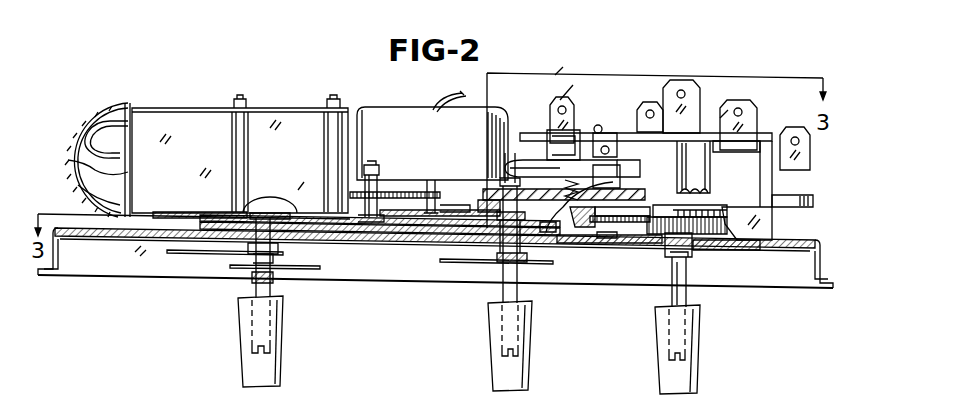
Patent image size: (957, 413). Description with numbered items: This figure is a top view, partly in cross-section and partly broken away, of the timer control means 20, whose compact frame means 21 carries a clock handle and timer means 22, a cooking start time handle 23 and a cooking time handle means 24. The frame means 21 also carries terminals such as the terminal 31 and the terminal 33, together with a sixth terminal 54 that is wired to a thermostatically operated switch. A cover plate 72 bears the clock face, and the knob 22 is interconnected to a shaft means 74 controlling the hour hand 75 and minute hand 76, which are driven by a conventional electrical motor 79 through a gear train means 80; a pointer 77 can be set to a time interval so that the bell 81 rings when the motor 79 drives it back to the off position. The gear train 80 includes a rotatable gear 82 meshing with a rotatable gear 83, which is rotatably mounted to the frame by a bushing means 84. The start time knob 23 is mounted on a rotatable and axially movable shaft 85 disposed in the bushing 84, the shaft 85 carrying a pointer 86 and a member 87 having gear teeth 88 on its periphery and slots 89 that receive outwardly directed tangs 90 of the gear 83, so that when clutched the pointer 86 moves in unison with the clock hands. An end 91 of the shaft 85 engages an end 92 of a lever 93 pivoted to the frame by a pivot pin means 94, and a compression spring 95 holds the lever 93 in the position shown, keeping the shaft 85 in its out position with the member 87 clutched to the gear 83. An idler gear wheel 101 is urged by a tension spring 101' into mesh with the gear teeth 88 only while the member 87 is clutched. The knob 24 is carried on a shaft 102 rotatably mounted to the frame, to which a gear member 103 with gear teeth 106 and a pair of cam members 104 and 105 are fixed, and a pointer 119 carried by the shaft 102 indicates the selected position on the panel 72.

The timer control means 20 is at (363, 50).
The frame means 21 is at (78, 273).
The clock handle and timer means 22 is at (285, 370).
The cooking start time handle 23 is at (530, 376).
The cooking time handle means 24 is at (698, 380).
The terminal 31 is at (646, 114).
The terminal 33 is at (745, 115).
The sixth terminal 54 is at (688, 96).
The cover plate 72 is at (110, 238).
The shaft means 74 is at (275, 245).
The hour hand 75 is at (298, 214).
The minute hand 76 is at (188, 256).
The pointer 77 is at (303, 270).
The electrical motor 79 is at (402, 118).
The gear train means 80 is at (353, 229).
The bell 81 is at (86, 118).
The rotatable gear 82 is at (412, 228).
The rotatable gear 83 is at (562, 238).
The bushing means 84 is at (522, 256).
The shaft 85 is at (518, 290).
The pointer 86 is at (458, 264).
The member 87 is at (602, 189).
The gear teeth 88 is at (460, 220).
The slots 89 is at (470, 217).
The tangs 90 is at (487, 213).
The end 91 is at (497, 170).
The end 92 is at (487, 205).
The lever 93 is at (575, 150).
The pivot pin means 94 is at (551, 168).
The compression spring 95 is at (593, 157).
The idler gear wheel 101 is at (620, 246).
The tension spring 101' is at (628, 274).
The shaft 102 is at (683, 272).
The gear member 103 is at (735, 225).
The cam member 104 is at (708, 215).
The cam member 105 is at (722, 213).
The gear teeth 106 is at (718, 237).
The pointer 119 is at (672, 250).